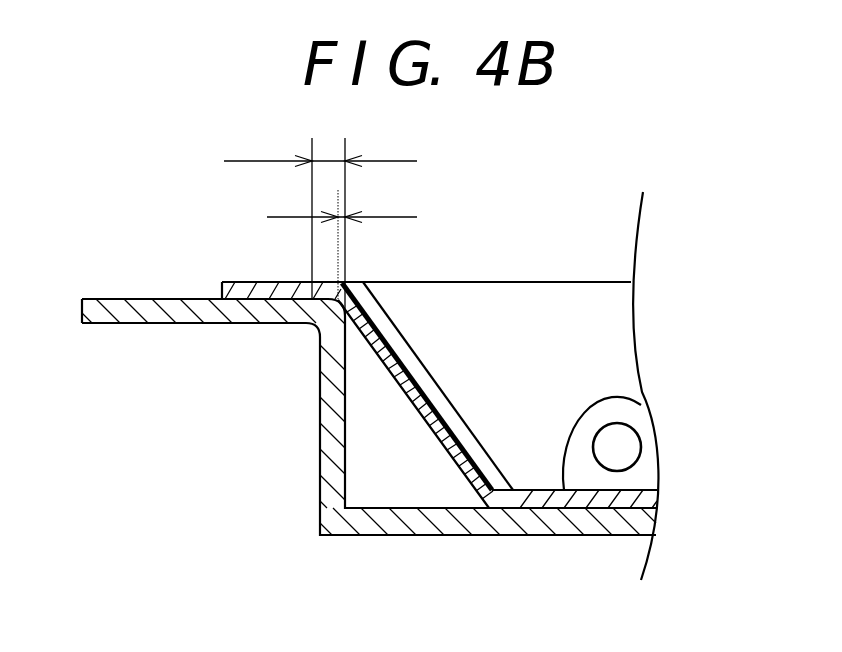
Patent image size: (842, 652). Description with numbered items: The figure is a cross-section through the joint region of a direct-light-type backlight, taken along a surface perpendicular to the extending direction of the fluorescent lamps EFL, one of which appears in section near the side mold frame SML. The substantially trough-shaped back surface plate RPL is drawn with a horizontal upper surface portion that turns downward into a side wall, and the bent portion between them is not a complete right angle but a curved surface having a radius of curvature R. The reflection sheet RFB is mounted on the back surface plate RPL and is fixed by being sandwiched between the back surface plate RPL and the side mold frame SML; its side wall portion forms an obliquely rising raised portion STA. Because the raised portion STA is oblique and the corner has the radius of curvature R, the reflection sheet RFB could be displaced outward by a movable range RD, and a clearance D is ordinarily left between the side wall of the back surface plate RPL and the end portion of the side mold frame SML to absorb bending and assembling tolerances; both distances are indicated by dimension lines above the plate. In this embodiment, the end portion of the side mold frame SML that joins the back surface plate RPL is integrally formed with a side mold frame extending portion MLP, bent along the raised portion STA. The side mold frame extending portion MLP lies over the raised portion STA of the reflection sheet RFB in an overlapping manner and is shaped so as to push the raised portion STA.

The back surface plate RPL is at (158, 317).
The radius of curvature R is at (320, 328).
The reflection sheet RFB is at (513, 502).
The raised portion STA is at (418, 405).
The side mold frame extending portion MLP is at (398, 338).
The side mold frame SML is at (560, 345).
The fluorescent lamp EFL is at (627, 452).
The movable range RD is at (320, 222).
The clearance D is at (342, 244).